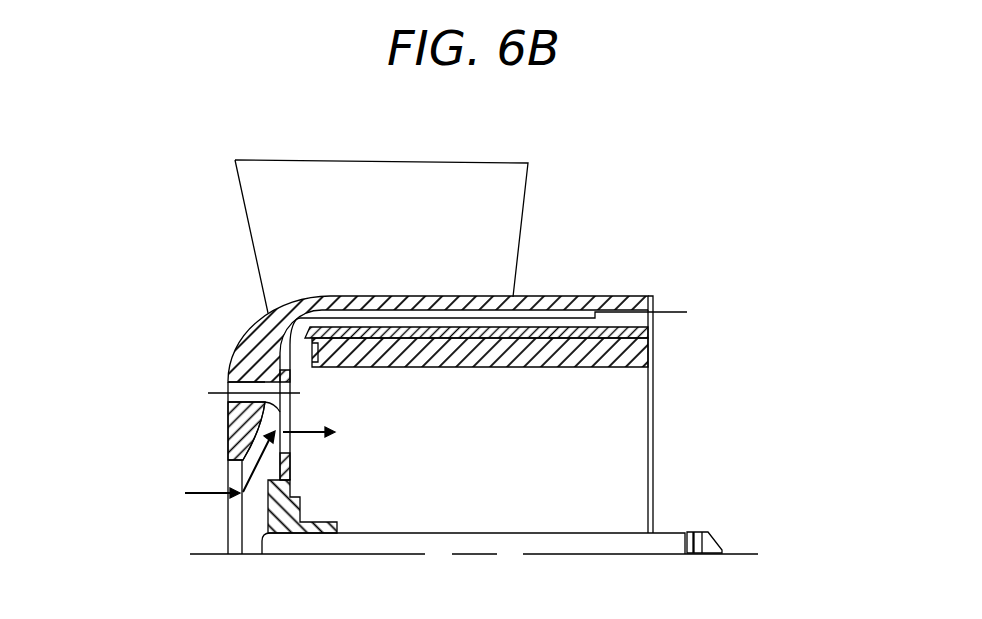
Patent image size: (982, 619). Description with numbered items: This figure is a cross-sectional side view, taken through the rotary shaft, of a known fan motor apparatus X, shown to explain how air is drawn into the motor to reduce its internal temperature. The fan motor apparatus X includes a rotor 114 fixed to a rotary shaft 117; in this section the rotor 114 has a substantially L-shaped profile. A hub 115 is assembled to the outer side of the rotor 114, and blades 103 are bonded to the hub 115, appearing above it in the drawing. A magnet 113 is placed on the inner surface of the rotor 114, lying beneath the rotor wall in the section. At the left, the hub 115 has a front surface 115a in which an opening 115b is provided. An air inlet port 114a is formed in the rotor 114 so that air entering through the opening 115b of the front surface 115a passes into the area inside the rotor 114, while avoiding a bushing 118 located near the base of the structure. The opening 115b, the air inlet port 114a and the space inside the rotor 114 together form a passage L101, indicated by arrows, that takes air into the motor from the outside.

The blades 103 is at (440, 167).
The hub 115 is at (608, 296).
The front surface of the hub 115a is at (227, 377).
The opening 115b is at (212, 530).
The air inlet port 114a is at (291, 405).
The rotor 114 is at (590, 340).
The magnet 113 is at (628, 362).
The bushing 118 is at (300, 503).
The rotary shaft 117 is at (668, 532).
The passage L101 is at (195, 493).
The fan motor apparatus X is at (753, 242).